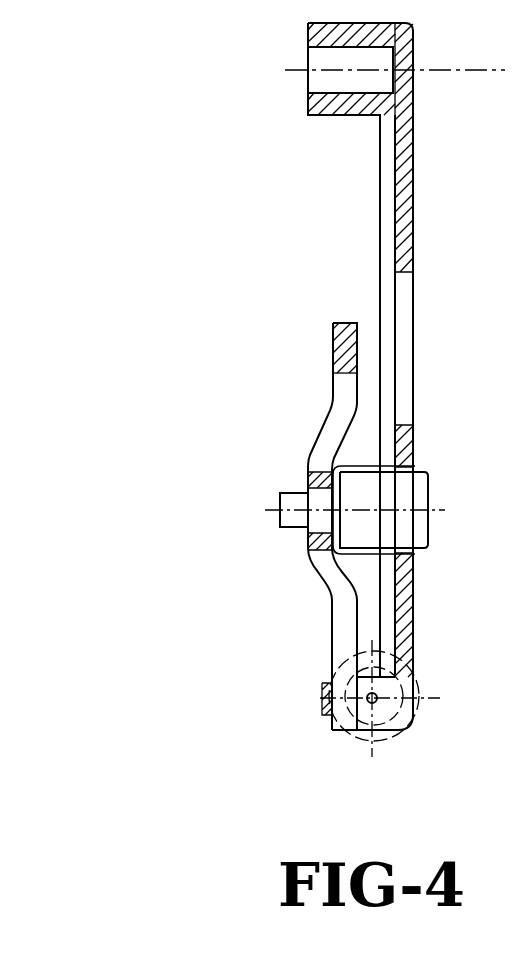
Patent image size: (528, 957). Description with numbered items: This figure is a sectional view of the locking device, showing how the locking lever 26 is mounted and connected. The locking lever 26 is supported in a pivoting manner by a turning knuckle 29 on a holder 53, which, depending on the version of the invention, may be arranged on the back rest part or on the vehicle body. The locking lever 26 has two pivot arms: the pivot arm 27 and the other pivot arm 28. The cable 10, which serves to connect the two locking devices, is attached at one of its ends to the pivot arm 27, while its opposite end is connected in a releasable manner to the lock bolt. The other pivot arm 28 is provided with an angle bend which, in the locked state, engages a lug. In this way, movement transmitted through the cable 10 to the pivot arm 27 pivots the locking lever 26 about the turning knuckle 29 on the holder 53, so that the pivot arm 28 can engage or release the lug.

The holder 53 is at (403, 164).
The pivot arm 28 is at (340, 335).
The locking lever 26 is at (311, 573).
The turning knuckle 29 is at (292, 497).
The pivot arm 27 is at (340, 628).
The cable 10 is at (375, 701).